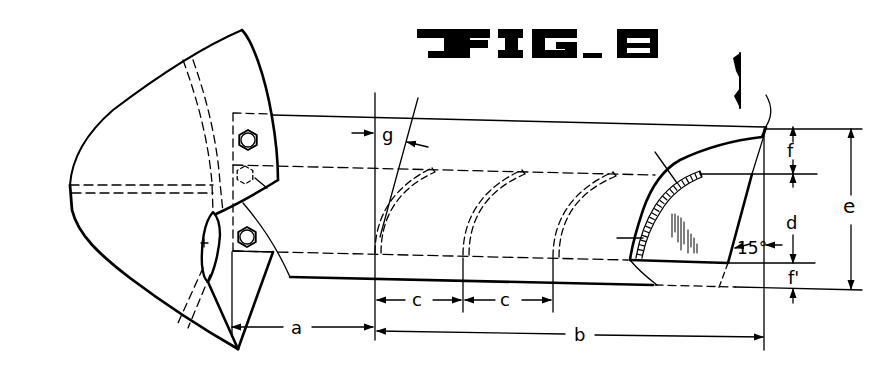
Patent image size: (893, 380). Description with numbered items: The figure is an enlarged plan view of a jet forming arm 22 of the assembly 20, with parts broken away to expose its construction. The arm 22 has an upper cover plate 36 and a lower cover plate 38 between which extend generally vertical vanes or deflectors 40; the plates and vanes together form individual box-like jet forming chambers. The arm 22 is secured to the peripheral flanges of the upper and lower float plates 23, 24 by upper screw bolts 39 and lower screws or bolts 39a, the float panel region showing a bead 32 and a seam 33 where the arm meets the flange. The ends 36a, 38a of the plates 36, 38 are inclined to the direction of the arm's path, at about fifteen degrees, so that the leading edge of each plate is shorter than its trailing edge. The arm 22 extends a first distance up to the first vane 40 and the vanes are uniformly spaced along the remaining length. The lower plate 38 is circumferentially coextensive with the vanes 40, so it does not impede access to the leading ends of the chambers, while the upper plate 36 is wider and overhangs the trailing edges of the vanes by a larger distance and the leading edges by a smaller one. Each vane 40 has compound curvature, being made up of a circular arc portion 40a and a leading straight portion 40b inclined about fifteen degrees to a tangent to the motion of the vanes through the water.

The panel assembly 20 is at (107, 72).
The jet forming arm 22 is at (337, 113).
The upper float plate 23 is at (166, 150).
The lower float plate 24 is at (258, 297).
The bead 32 is at (203, 242).
The seam 33 is at (88, 192).
The upper cover plate 36 is at (470, 123).
The end of upper plate 36a is at (772, 101).
The lower cover plate 38 is at (673, 243).
The end of lower plate 38a is at (750, 192).
The upper screw bolt 39 is at (258, 138).
The lower screw or bolt 39a is at (253, 229).
The vane 40 is at (647, 204).
The circular arc portion 40a is at (592, 168).
The straight portion 40b is at (562, 245).